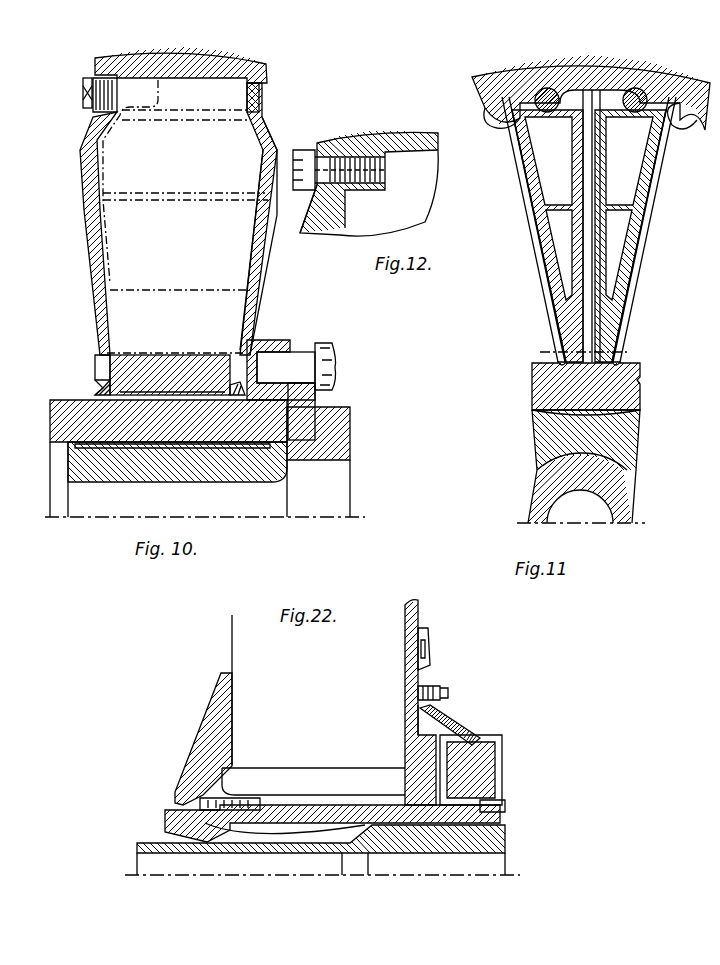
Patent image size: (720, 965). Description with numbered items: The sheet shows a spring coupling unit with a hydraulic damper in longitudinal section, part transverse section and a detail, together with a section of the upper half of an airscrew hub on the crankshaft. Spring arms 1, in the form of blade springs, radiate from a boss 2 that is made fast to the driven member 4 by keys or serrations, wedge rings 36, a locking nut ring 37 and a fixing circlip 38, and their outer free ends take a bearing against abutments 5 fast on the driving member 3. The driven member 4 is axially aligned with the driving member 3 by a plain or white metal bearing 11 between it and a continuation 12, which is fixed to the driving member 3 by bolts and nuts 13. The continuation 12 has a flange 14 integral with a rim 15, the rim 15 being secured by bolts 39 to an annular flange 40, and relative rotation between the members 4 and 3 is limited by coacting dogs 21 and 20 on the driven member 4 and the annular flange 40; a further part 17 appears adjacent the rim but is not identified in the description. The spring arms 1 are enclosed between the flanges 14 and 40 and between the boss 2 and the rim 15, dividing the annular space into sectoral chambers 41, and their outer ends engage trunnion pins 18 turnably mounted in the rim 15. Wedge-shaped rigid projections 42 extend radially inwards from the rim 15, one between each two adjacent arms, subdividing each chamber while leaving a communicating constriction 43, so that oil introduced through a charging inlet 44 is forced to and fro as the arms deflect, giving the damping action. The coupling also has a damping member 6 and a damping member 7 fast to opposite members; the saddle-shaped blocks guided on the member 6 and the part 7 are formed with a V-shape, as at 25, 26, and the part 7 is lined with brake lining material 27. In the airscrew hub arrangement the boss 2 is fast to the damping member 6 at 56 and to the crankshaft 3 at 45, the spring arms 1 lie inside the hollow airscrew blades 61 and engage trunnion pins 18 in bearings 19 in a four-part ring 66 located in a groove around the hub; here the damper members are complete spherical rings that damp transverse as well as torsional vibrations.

In FIG. 10, the spring arms 1 is at (243, 280).
In FIG. 11, the spring arms 1 is at (598, 262).
In FIG. 10, the boss 2 is at (175, 362).
In FIG. 11, the boss 2 is at (642, 390).
In FIG. 22, the boss 2 is at (285, 817).
In FIG. 10, the driving member 3 is at (316, 450).
In FIG. 22, the driving member 3 is at (438, 836).
In FIG. 10, the driven member 4 is at (62, 416).
In FIG. 11, the driven member 4 is at (636, 438).
In FIG. 22, the driven member 4 is at (212, 718).
In FIG. 10, the abutments 5 is at (205, 120).
In FIG. 11, the abutments 5 is at (632, 112).
In FIG. 22, the damping member 6 is at (420, 745).
In FIG. 22, the damping member 7 is at (462, 722).
In FIG. 10, the plain or white metal bearing 11 is at (140, 452).
In FIG. 11, the plain or white metal bearing 11 is at (580, 470).
In FIG. 10, the continuation 12 is at (100, 470).
In FIG. 11, the continuation 12 is at (626, 492).
In FIG. 10, the bolts and nuts 13 is at (320, 360).
In FIG. 11, the bolts and nuts 13 is at (545, 405).
In FIG. 10, the flange 14 is at (272, 270).
In FIG. 10, the rim 15 is at (215, 58).
In FIG. 12, the rim 15 is at (395, 138).
In FIG. 11, the rim 15 is at (525, 80).
In FIG. 10, the flange 17 is at (268, 78).
In FIG. 11, the flange 17 is at (598, 88).
In FIG. 10, the trunnion pins 18 is at (262, 97).
In FIG. 11, the trunnion pins 18 is at (500, 125).
In FIG. 10, the bearings 19 is at (270, 120).
In FIG. 11, the bearings 19 is at (490, 112).
In FIG. 10, the dog 20 is at (100, 365).
In FIG. 10, the dog 21 is at (98, 382).
In FIG. 22, the V-shape 25 is at (428, 726).
In FIG. 22, the V-shape 26 is at (445, 705).
In FIG. 22, the brake lining material 27 is at (488, 738).
In FIG. 10, the wedge rings 36 is at (110, 380).
In FIG. 10, the locking nut ring 37 is at (280, 343).
In FIG. 10, the fixing circlip 38 is at (300, 400).
In FIG. 12, the bolts 39 is at (322, 165).
In FIG. 11, the bolts 39 is at (547, 112).
In FIG. 10, the annular flange 40 is at (86, 264).
In FIG. 12, the annular flange 40 is at (313, 225).
In FIG. 11, the sectoral chambers 41 is at (640, 225).
In FIG. 11, the rigid projections 42 is at (550, 285).
In FIG. 11, the communicating constriction 43 is at (620, 362).
In FIG. 10, the charging inlet 44 is at (84, 96).
In FIG. 22, the fastening of boss to crankshaft 45 is at (405, 830).
In FIG. 22, the fastening of boss to damping member 56 is at (505, 806).
In FIG. 22, the hollow airscrew blades 61 is at (230, 644).
In FIG. 22, the four-part ring 66 is at (432, 650).